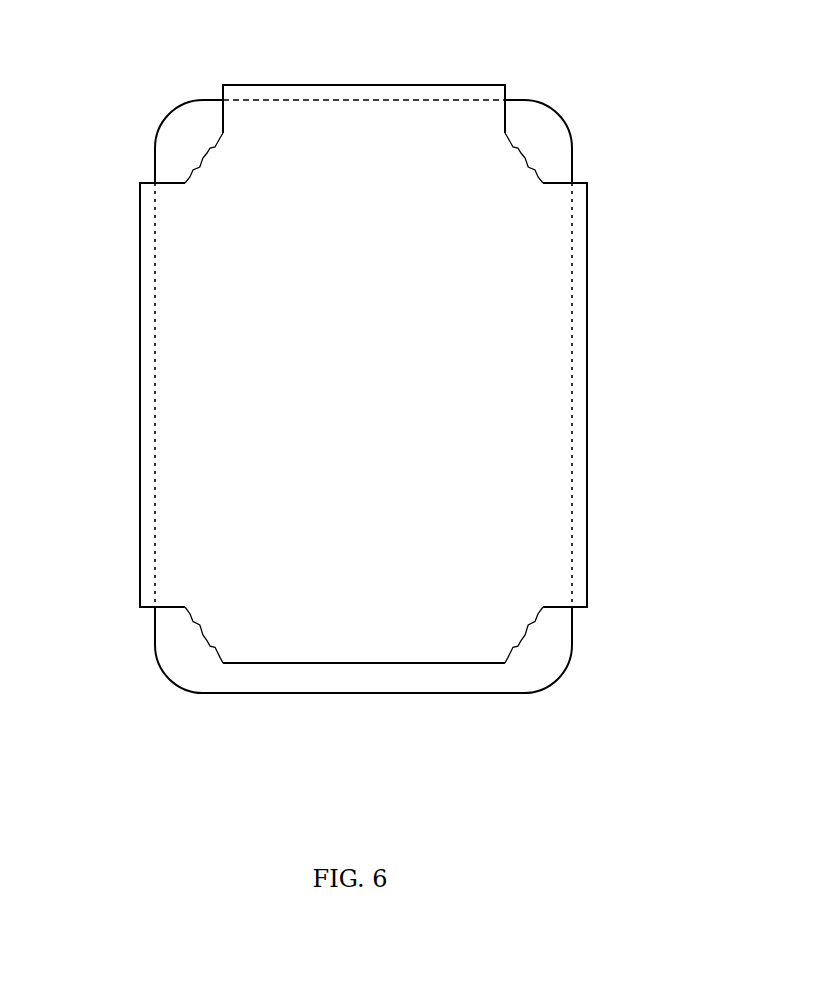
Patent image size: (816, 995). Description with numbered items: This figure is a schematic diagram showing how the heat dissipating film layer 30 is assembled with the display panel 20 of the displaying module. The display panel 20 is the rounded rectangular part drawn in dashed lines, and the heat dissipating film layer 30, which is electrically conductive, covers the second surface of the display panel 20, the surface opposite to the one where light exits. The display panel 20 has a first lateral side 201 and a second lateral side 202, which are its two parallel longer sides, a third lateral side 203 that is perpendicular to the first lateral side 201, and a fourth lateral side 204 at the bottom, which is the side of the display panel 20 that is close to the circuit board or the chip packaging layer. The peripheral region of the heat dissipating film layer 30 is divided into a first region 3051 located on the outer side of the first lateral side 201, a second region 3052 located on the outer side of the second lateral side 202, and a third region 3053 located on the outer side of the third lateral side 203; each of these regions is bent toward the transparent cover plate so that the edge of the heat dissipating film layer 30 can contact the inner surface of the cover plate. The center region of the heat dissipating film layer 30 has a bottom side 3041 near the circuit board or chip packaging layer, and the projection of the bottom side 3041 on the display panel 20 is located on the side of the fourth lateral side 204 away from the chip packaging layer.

The display panel 20 is at (572, 158).
The heat dissipating film layer 30 is at (505, 113).
The first lateral side 201 is at (157, 307).
The second lateral side 202 is at (572, 250).
The third lateral side 203 is at (312, 102).
The fourth lateral side 204 is at (410, 663).
The bottom side 3041 is at (262, 693).
The first region 3051 is at (157, 473).
The second region 3052 is at (587, 335).
The third region 3053 is at (240, 85).